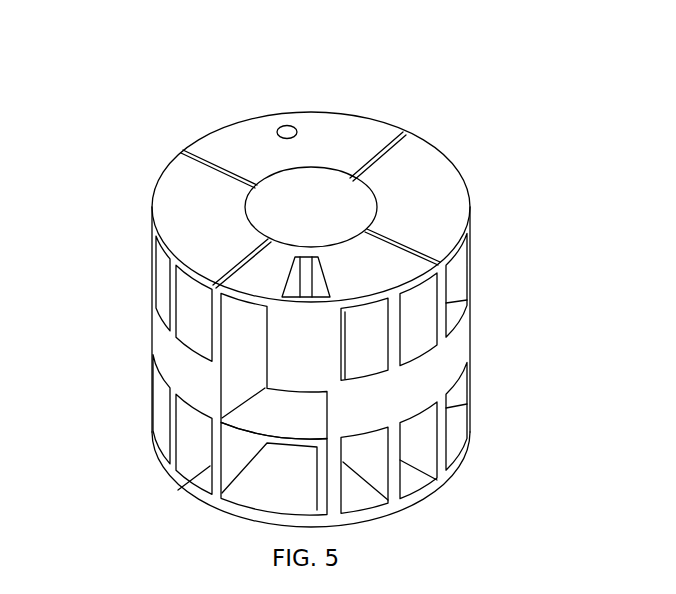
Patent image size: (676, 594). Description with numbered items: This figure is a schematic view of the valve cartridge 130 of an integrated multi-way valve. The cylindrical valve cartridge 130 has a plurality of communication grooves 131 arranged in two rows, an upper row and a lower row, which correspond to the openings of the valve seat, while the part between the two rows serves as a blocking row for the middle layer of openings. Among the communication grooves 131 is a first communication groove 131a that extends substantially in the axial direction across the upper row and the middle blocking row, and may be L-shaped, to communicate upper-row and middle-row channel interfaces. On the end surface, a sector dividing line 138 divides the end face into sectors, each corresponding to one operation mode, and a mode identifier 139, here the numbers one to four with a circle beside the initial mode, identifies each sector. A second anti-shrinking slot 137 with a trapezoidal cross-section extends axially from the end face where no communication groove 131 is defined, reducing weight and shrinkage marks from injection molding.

The valve cartridge 130 is at (121, 29).
The communication grooves 131 is at (342, 416).
The first communication groove 131a is at (243, 372).
The second anti-shrinking slot 137 is at (308, 275).
The sector dividing line 138 is at (421, 248).
The mode identifier 139 is at (307, 137).